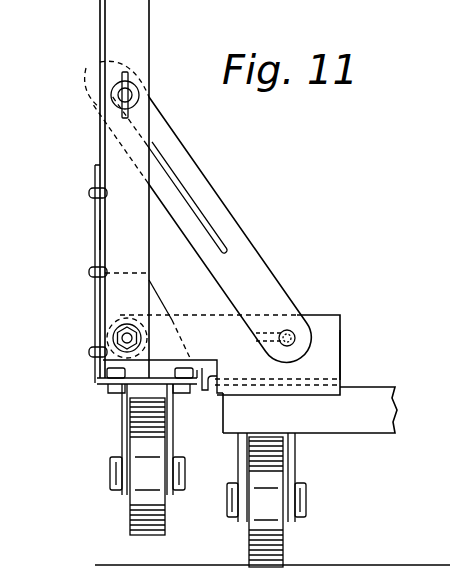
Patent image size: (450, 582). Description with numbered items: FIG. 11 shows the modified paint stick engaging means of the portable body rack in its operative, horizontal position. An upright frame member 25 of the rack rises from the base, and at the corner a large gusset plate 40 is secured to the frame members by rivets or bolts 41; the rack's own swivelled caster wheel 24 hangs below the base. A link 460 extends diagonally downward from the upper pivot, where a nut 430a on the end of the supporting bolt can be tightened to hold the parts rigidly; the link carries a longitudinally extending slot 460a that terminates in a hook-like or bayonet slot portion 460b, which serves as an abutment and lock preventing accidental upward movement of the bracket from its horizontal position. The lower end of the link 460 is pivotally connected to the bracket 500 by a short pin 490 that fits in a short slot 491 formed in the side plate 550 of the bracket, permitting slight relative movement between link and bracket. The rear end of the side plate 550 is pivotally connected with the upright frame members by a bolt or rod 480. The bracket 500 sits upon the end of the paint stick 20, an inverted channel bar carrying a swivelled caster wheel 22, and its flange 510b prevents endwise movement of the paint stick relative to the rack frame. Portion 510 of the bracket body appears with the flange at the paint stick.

The upright frame member 25 is at (140, 38).
The nut 430a is at (137, 83).
The hook-like or bayonet slot portion 460b is at (86, 68).
The link 460 is at (225, 212).
The longitudinally extending slot 460a is at (172, 175).
The gusset plate 40 is at (100, 235).
The rivets or bolts 41 is at (95, 272).
The bolt or rod 480 is at (121, 338).
The pin 490 is at (289, 332).
The slot 491 is at (254, 338).
The bracket 500 is at (342, 315).
The side plate 550 is at (327, 355).
The paint stick 20 is at (377, 395).
The housing 510 is at (288, 385).
The flange 510b is at (203, 393).
The swivelled caster wheel 24 is at (143, 445).
The swivelled caster wheel 22 is at (278, 481).